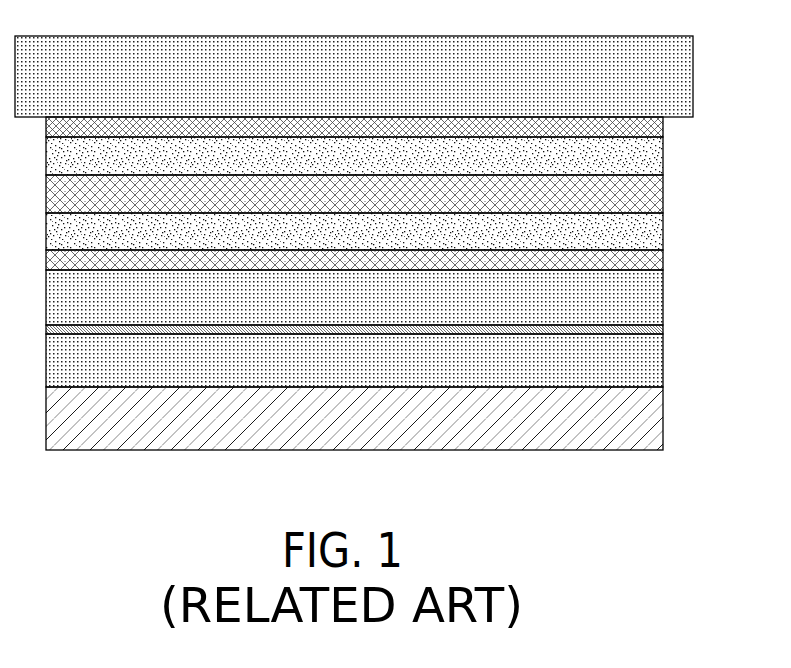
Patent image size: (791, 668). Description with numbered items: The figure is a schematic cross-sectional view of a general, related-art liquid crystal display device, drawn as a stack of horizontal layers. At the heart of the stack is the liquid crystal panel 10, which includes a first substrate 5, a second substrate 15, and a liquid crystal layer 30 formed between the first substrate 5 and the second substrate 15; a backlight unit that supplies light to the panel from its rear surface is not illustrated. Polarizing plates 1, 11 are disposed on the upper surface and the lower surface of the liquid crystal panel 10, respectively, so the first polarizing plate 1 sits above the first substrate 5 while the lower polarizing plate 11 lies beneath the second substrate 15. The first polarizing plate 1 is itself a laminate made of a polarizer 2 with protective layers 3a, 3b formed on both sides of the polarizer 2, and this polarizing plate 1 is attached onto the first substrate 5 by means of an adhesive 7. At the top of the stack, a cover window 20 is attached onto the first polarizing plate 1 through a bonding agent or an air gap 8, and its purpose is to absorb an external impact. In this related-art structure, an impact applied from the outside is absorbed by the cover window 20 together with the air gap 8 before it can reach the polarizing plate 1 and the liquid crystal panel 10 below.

The cover window 20 is at (685, 77).
The air gap 8 is at (660, 128).
The protective layer 3b is at (660, 157).
The polarizer 2 is at (660, 195).
The protective layer 3a is at (386, 231).
The first polarizing plate 1 is at (402, 193).
The adhesive 7 is at (660, 262).
The first substrate 5 is at (660, 297).
The liquid crystal layer 30 is at (660, 329).
The second substrate 15 is at (386, 360).
The liquid crystal panel 10 is at (407, 328).
The polarizing plate 11 is at (660, 420).